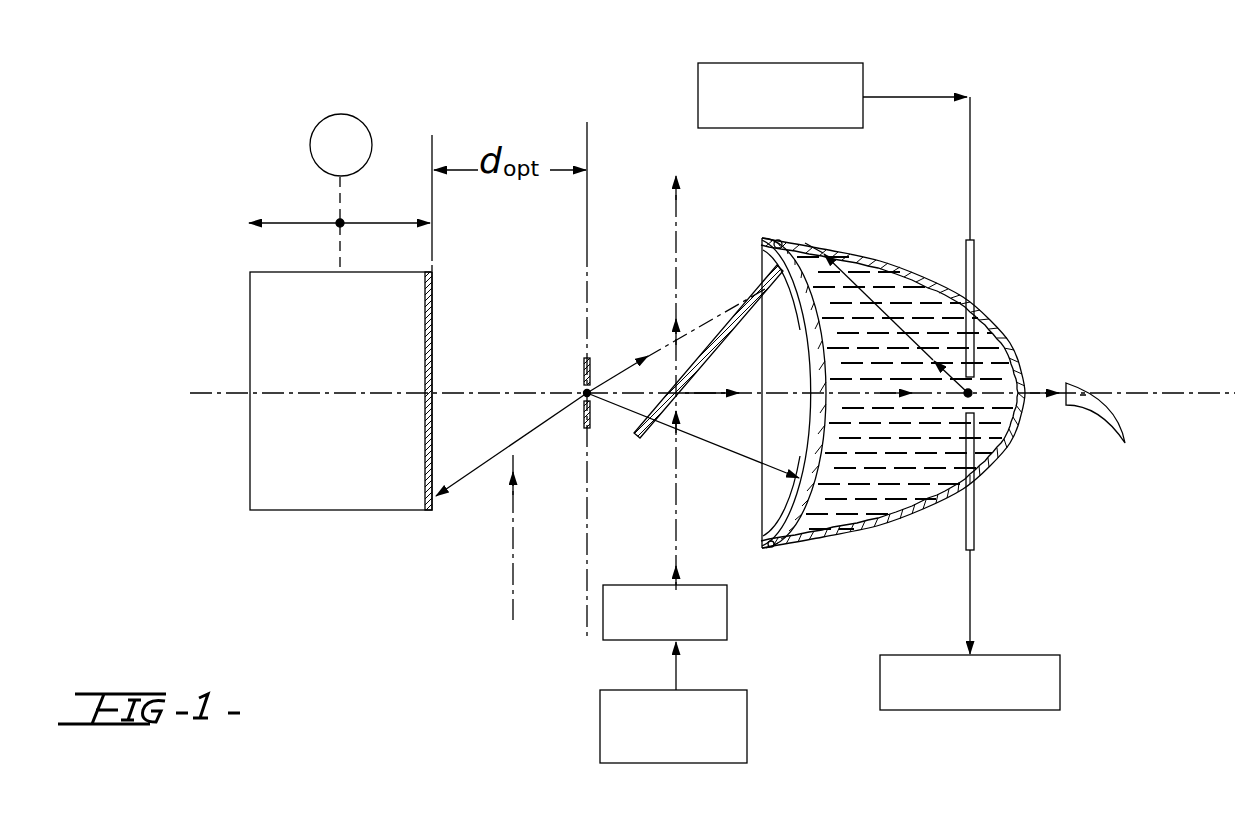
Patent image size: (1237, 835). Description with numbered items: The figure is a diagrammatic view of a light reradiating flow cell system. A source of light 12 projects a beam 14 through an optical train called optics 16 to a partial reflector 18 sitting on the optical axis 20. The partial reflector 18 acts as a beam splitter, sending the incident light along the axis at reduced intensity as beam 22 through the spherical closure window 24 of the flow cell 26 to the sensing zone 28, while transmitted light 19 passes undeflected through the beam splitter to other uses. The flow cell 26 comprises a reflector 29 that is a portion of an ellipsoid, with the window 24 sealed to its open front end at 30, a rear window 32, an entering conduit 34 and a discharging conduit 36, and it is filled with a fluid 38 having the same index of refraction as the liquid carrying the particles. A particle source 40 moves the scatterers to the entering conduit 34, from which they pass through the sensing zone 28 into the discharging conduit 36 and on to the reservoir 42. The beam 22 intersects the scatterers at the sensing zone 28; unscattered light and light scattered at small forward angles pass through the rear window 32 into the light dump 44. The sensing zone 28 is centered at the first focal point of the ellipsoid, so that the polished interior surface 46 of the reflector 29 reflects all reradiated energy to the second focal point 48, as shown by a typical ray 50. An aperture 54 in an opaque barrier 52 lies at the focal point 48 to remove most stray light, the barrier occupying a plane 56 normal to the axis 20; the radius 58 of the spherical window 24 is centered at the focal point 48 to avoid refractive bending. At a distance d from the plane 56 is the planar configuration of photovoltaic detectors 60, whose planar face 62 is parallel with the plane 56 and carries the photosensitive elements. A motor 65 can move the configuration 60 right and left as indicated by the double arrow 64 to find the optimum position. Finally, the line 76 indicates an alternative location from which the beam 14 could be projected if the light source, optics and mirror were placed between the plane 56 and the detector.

The source of light 12 is at (749, 728).
The beam 14 is at (678, 674).
The optics 16 is at (728, 616).
The partial reflector 18 is at (700, 355).
The transmitted light 19 is at (678, 277).
The optical axis 20 is at (224, 392).
The beam of light 22 is at (704, 396).
The spherical closure window 24 is at (769, 527).
The flow cell 26 is at (1008, 312).
The sensing zone 28 is at (973, 396).
The reflector 29 is at (927, 277).
The seal 30 is at (773, 238).
The rear window 32 is at (1026, 392).
The entering conduit 34 is at (974, 367).
The discharging conduit 36 is at (978, 460).
The fluid 38 is at (900, 460).
The particle source 40 is at (805, 63).
The reservoir 42 is at (1018, 654).
The light dump 44 is at (1126, 441).
The interior surface 46 is at (884, 518).
The second focal point 48 is at (584, 392).
The ray of light 50 is at (915, 340).
The opaque barrier 52 is at (588, 358).
The aperture 54 is at (590, 386).
The plane of the opaque barrier 56 is at (590, 245).
The radius 58 is at (690, 446).
The planar configuration of detectors 60 is at (248, 291).
The planar face 62 is at (433, 300).
The double arrow 64 is at (300, 222).
The motor 65 is at (371, 126).
The alternative beam location 76 is at (515, 533).